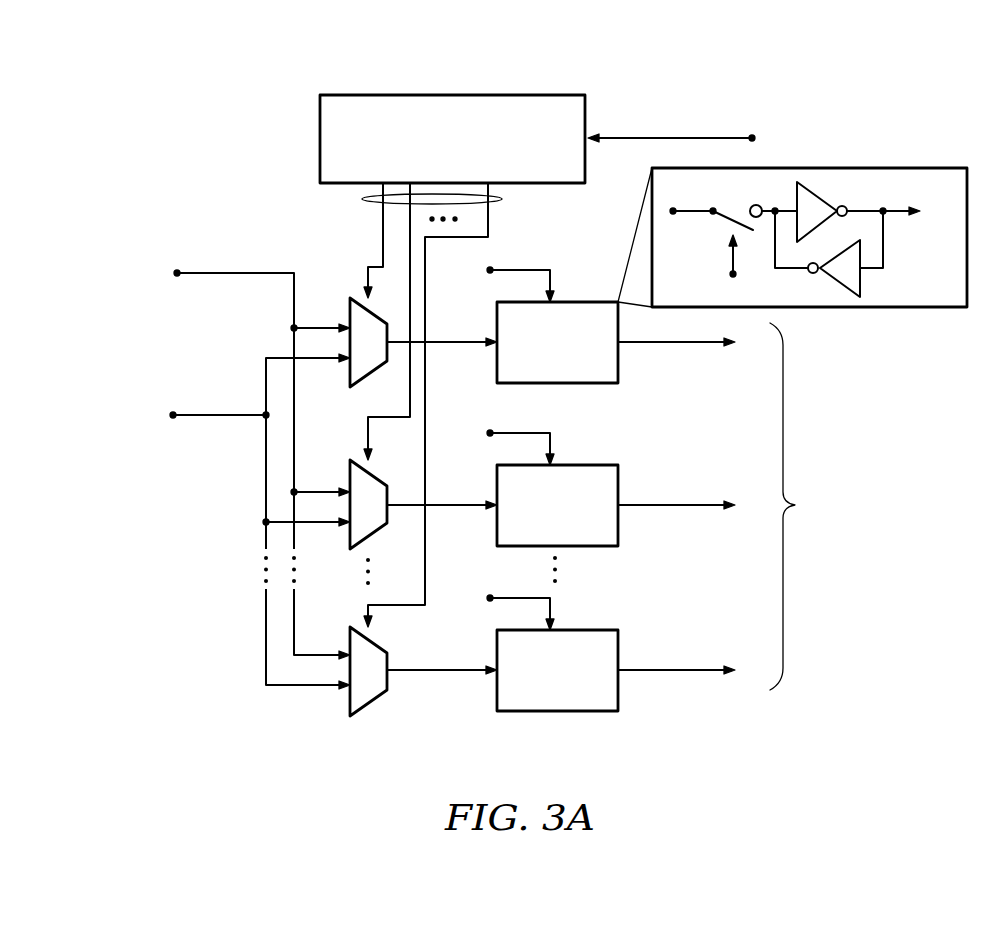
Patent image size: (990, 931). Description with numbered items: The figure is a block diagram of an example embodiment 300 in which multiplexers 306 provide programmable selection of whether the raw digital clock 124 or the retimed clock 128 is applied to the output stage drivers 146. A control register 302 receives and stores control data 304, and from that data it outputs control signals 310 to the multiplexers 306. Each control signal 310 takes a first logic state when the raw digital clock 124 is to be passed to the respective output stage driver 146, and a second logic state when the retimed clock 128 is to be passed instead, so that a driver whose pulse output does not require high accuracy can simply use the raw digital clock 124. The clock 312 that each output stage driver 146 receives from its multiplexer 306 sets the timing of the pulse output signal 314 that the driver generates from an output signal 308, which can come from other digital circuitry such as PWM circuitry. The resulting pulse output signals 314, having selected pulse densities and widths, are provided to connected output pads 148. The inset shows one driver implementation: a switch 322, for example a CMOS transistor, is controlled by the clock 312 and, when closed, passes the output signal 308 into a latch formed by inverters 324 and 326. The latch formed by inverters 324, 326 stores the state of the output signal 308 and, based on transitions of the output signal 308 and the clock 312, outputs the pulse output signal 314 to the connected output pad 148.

The example embodiment 300 is at (222, 66).
The control register 302 is at (460, 95).
The control data 304 is at (622, 138).
The multiplexer 306 is at (352, 305).
The output signal 308 is at (510, 270).
The control signal 310 is at (365, 200).
The clock 312 is at (458, 340).
The pulse output signal 314 is at (688, 342).
The output stage driver 146 is at (620, 368).
The output pad 148 is at (855, 506).
The raw digital clock 124 is at (222, 275).
The retimed clock 128 is at (222, 418).
The switch 322 is at (718, 217).
The inverter 324 is at (814, 196).
The inverter 326 is at (827, 277).